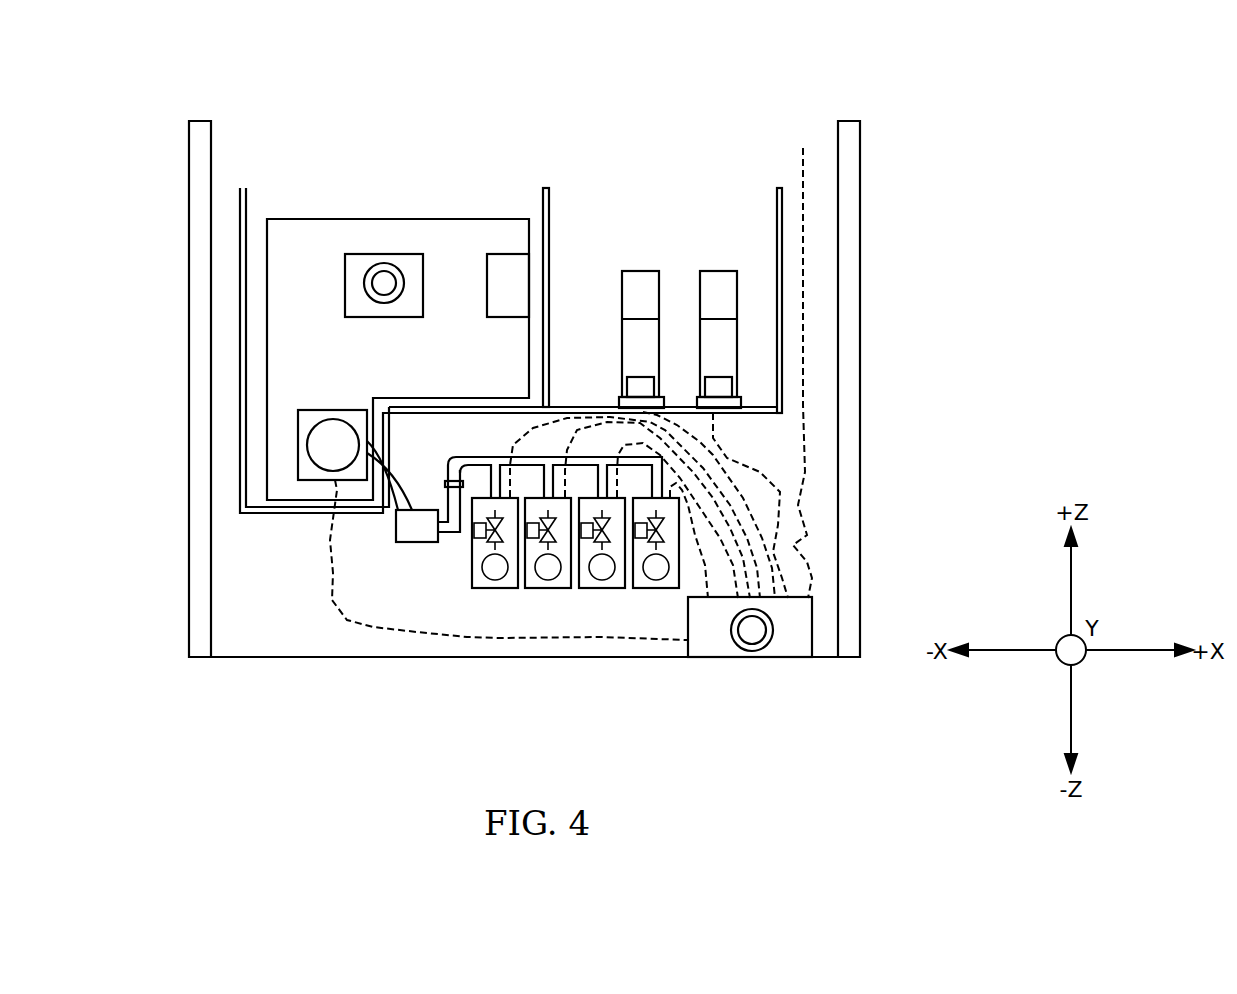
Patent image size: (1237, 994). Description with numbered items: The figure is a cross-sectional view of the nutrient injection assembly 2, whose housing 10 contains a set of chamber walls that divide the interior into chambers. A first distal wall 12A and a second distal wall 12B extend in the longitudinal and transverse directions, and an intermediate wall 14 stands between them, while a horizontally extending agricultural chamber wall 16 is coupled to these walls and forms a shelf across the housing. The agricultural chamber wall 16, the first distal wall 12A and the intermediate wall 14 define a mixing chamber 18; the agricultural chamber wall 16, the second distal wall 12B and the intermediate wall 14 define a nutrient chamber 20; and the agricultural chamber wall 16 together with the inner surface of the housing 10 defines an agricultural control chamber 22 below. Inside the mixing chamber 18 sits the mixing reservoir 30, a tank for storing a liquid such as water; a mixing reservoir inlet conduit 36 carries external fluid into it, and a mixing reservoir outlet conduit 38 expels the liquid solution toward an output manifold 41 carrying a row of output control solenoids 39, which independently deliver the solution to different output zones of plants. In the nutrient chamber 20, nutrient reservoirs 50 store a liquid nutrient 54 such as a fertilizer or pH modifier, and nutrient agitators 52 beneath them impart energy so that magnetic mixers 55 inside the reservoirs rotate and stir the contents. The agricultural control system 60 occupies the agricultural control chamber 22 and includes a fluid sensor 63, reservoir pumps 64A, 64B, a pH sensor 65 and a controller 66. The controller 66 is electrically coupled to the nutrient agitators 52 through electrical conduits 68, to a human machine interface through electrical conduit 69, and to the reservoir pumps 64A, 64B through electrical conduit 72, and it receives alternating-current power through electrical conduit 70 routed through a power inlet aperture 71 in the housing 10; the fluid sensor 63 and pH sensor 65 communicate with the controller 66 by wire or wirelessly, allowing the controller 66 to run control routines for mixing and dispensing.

The nutrient injection assembly 2 is at (883, 80).
The housing 10 is at (188, 313).
The first distal wall 12A is at (238, 238).
The second distal wall 12B is at (777, 205).
The intermediate wall 14 is at (545, 188).
The agricultural chamber wall 16 is at (780, 411).
The mixing chamber 18 is at (410, 133).
The nutrient chamber 20 is at (677, 273).
The agricultural control chamber 22 is at (237, 571).
The mixing reservoir 30 is at (410, 219).
The mixing reservoir inlet conduit 36 is at (387, 303).
The mixing reservoir outlet conduit 38 is at (447, 533).
The output control solenoid 39 is at (494, 590).
The output manifold 41 is at (477, 455).
The nutrient reservoir 50 is at (637, 303).
The nutrient agitator 52 is at (620, 403).
The liquid nutrient 54 is at (637, 358).
The magnetic mixer 55 is at (640, 377).
The agricultural control system 60 is at (760, 723).
The fluid sensor 63 is at (517, 254).
The reservoir pump 64A is at (357, 254).
The reservoir pump 64B is at (333, 410).
The pH sensor 65 is at (418, 542).
The controller 66 is at (802, 645).
The electrical conduits 68 is at (713, 424).
The electrical conduit 69 is at (803, 223).
The electrical conduit 70 is at (752, 632).
The power inlet aperture 71 is at (737, 640).
The electrical conduit 72 is at (330, 535).